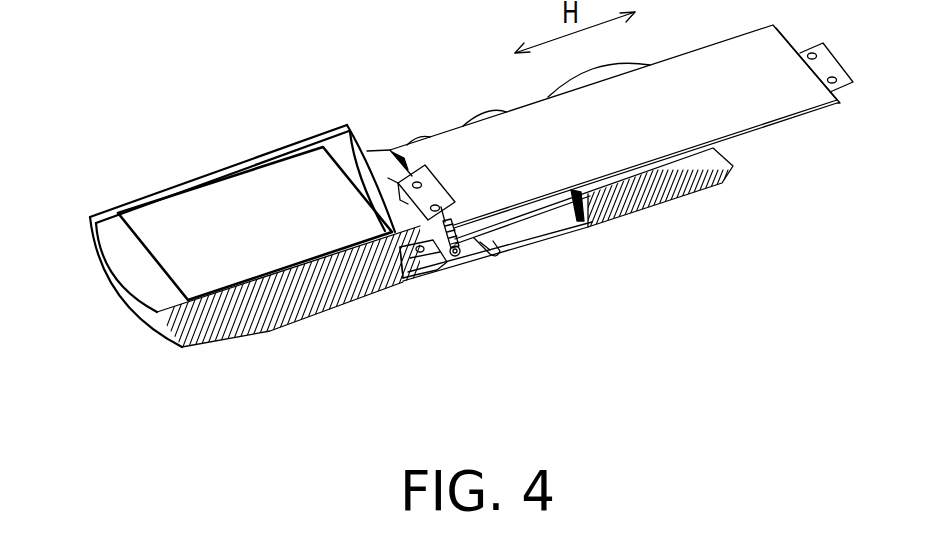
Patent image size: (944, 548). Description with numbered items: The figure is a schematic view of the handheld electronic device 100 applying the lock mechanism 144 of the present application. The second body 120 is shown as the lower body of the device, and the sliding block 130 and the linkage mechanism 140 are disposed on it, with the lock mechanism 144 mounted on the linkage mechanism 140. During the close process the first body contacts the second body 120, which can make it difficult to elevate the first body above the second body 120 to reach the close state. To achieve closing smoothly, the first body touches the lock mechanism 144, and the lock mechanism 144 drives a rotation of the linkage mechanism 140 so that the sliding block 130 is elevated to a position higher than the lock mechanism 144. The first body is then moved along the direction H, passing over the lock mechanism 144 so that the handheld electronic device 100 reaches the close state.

The handheld electronic device 100 is at (471, 206).
The second body 120 is at (332, 305).
The sliding block 130 is at (562, 210).
The linkage mechanism 140 is at (427, 270).
The lock mechanism 144 is at (482, 267).